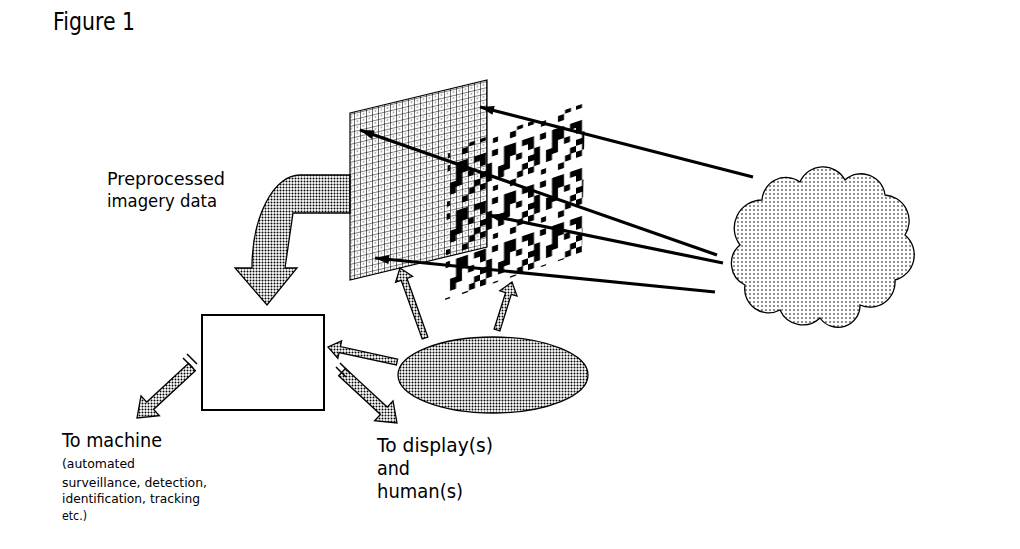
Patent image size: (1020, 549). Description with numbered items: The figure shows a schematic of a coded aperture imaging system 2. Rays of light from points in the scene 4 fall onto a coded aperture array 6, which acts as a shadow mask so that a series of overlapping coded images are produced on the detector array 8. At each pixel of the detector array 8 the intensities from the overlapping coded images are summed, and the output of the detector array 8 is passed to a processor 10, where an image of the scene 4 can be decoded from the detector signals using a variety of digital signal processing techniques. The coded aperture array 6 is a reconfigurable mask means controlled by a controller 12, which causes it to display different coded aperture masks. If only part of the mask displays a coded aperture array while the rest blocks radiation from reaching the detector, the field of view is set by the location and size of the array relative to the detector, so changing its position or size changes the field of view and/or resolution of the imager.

The coded aperture imaging system 2 is at (638, 103).
The scene 4 is at (850, 251).
The coded aperture array 6 is at (590, 170).
The detector array 8 is at (377, 107).
The processor 10 is at (210, 335).
The controller 12 is at (570, 382).